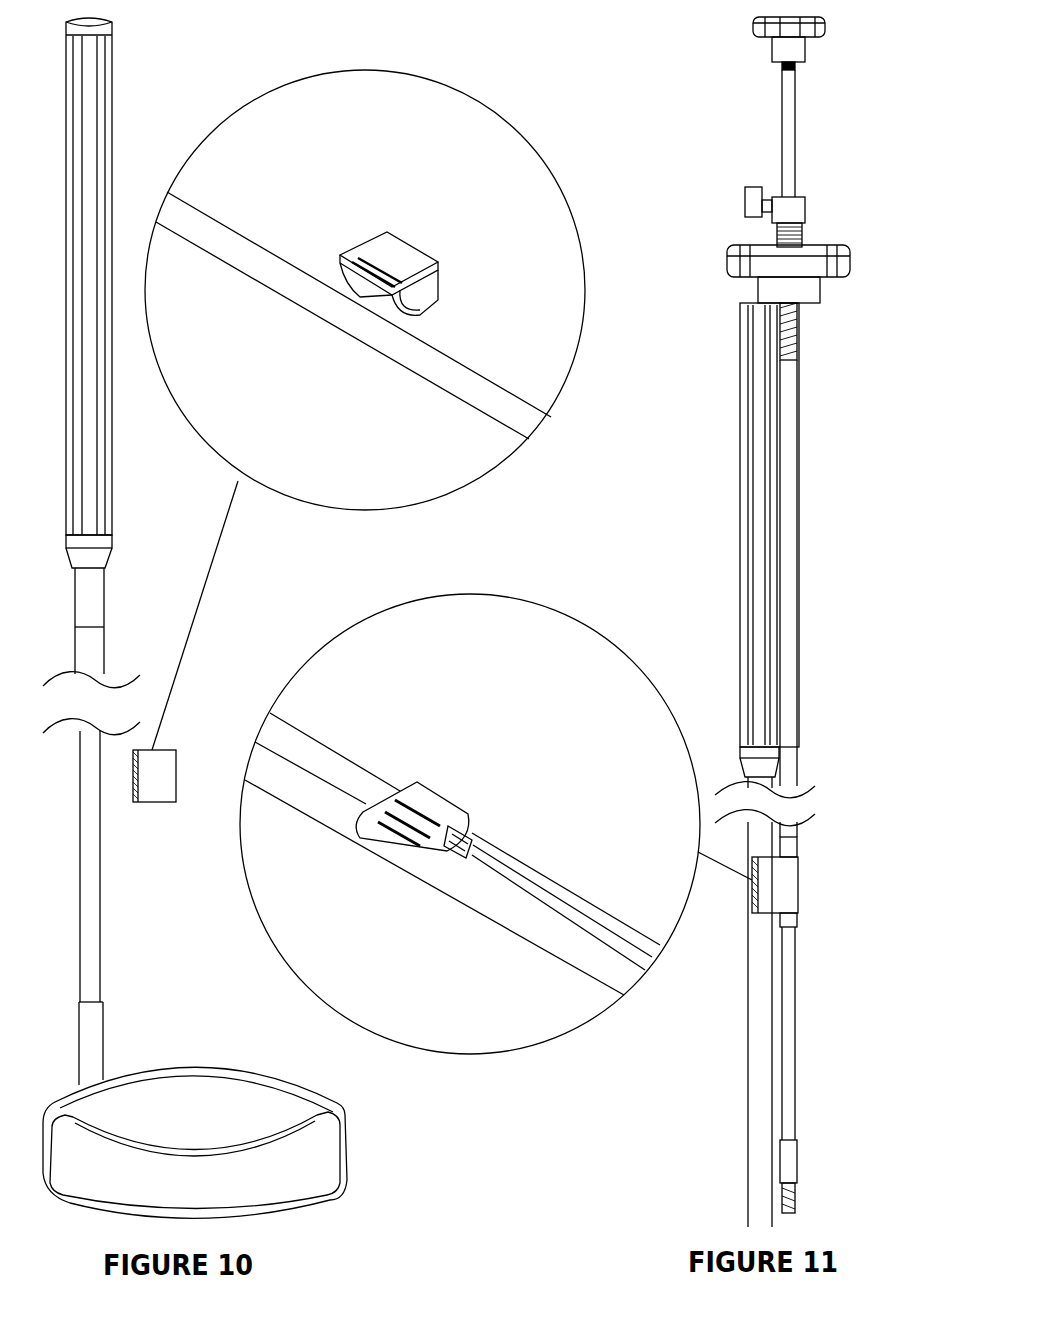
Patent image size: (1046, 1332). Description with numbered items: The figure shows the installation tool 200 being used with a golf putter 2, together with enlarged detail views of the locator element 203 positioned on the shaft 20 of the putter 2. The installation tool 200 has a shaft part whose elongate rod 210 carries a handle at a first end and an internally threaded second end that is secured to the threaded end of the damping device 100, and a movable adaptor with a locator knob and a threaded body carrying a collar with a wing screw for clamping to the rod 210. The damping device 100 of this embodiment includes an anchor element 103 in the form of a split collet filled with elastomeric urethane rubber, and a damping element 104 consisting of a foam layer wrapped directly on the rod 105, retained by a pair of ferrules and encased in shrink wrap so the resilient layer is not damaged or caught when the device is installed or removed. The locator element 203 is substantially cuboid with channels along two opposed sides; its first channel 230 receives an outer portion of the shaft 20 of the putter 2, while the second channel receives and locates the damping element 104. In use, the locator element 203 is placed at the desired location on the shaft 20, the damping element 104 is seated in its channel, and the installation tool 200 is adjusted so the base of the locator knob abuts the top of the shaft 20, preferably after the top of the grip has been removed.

In FIG. 10, the putter 2 is at (166, 62).
In FIG. 11, the putter 2 is at (715, 415).
In FIG. 10, the shaft 20 is at (249, 264).
In FIG. 11, the shaft 20 is at (307, 802).
In FIG. 11, the damping device 100 is at (595, 871).
In FIG. 11, the anchor element 103 is at (783, 1168).
In FIG. 11, the damping element 104 is at (484, 821).
In FIG. 11, the rod 105 is at (787, 1022).
In FIG. 11, the installation tool 200 is at (745, 108).
In FIG. 10, the locator element 203 is at (178, 811).
In FIG. 11, the locator element 203 is at (391, 752).
In FIG. 11, the elongate rod 210 is at (307, 755).
In FIG. 10, the first channel 230 is at (365, 292).